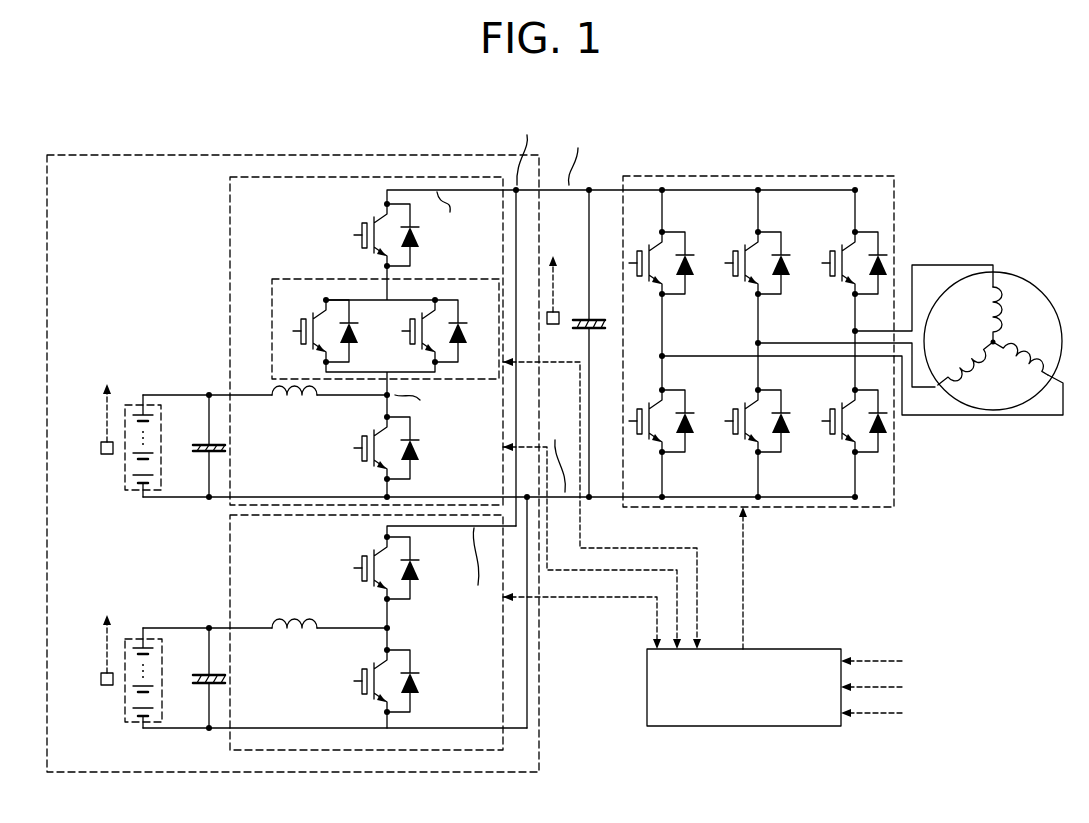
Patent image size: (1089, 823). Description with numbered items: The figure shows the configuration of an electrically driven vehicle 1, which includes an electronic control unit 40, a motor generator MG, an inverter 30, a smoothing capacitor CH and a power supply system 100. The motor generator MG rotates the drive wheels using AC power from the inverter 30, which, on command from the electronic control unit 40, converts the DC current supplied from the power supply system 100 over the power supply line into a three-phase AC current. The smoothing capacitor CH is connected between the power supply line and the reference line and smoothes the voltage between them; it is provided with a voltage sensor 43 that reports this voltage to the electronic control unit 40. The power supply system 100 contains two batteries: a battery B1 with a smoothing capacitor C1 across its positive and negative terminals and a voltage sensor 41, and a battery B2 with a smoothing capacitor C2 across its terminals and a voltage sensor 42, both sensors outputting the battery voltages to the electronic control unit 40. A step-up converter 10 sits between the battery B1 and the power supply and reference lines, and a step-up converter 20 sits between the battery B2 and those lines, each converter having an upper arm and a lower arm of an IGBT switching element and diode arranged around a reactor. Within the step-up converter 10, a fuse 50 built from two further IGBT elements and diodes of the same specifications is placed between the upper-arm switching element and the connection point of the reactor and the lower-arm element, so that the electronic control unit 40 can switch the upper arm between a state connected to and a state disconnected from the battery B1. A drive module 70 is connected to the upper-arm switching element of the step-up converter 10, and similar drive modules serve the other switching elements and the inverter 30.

The electrically driven vehicle 1 is at (1003, 178).
The power supply system 100 is at (457, 155).
The step-up converter 10 is at (230, 202).
The step-up converter 20 is at (230, 550).
The inverter 30 is at (894, 192).
The electronic control unit (ECU) 40 is at (690, 727).
The voltage sensor 41 is at (106, 455).
The voltage sensor 42 is at (106, 686).
The voltage sensor 43 is at (554, 325).
The fuse 50 is at (290, 279).
The drive module 70 is at (364, 222).
The battery B1 is at (127, 491).
The battery B2 is at (128, 723).
The smoothing capacitor C1 is at (194, 446).
The smoothing capacitor C2 is at (194, 678).
The smoothing capacitor CH is at (596, 343).
The motor generator MG is at (1040, 290).